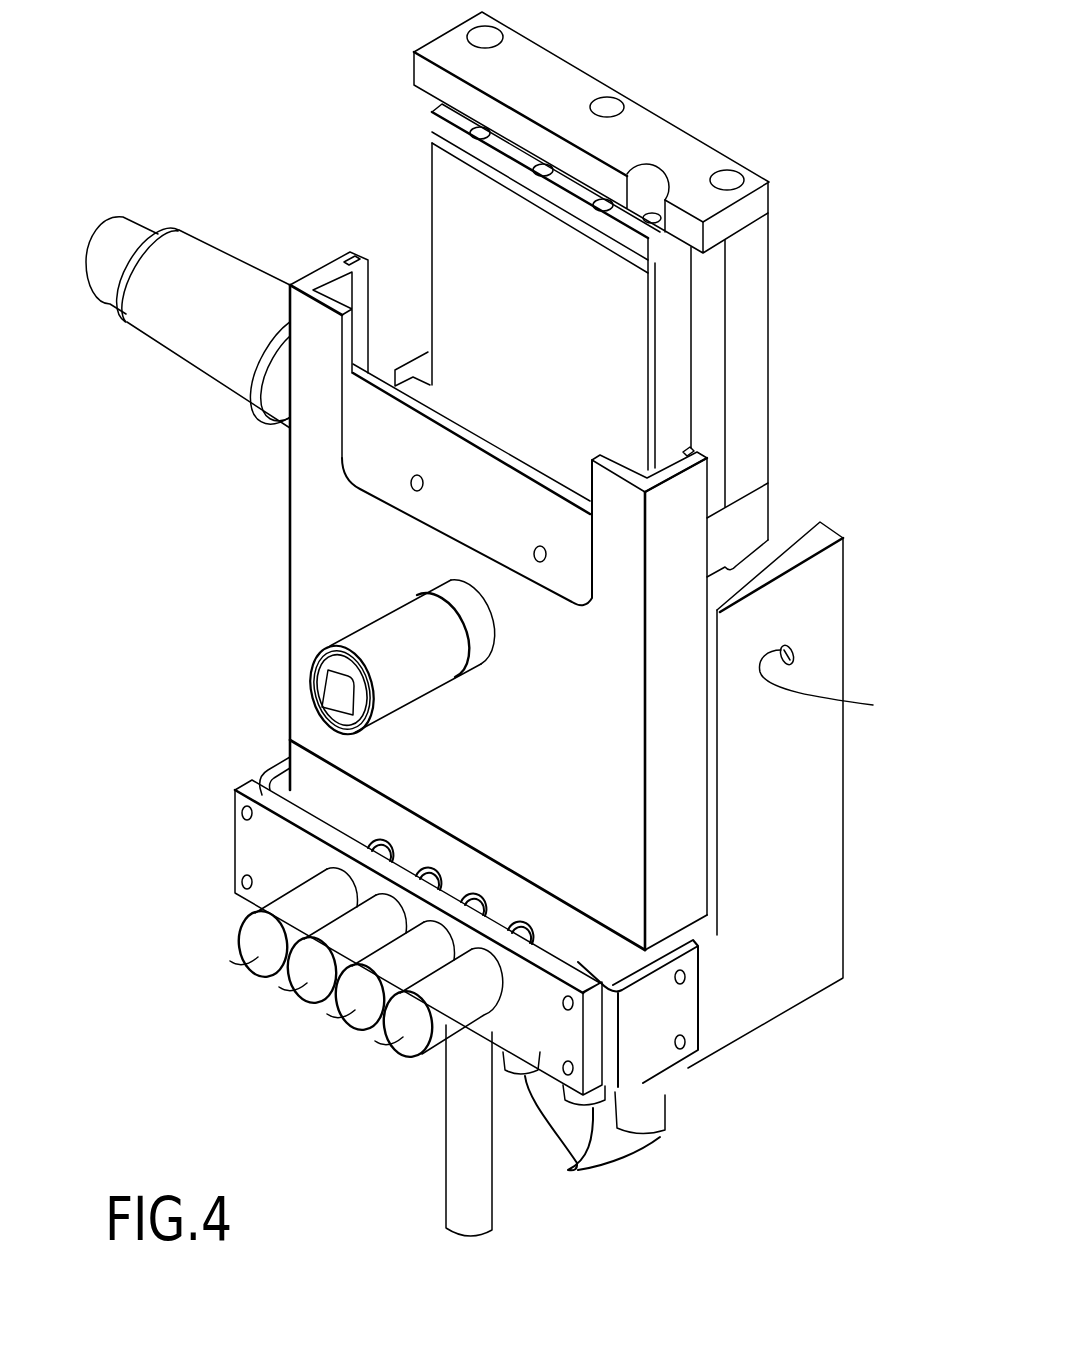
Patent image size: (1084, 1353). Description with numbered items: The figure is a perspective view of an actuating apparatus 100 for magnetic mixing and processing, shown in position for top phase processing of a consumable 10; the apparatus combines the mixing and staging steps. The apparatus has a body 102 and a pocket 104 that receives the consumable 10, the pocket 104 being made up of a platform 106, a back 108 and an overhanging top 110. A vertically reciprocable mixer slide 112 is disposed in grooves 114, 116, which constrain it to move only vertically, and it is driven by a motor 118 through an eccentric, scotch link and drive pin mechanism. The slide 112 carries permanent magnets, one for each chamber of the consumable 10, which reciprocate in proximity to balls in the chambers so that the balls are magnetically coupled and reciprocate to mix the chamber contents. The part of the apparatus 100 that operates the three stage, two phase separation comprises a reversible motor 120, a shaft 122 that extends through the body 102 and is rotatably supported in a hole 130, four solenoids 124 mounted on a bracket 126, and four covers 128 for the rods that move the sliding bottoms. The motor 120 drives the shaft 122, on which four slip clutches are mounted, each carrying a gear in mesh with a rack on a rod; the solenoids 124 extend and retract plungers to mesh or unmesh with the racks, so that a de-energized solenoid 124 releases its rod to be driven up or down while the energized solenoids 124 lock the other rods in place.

The actuating apparatus 100 is at (303, 81).
The consumable 10 is at (445, 170).
The body 102 is at (828, 577).
The pocket 104 is at (688, 302).
The platform 106 is at (753, 507).
The back 108 is at (758, 252).
The overhanging top 110 is at (758, 207).
The mixer slide 112 is at (312, 468).
The groove 114 is at (351, 248).
The groove 116 is at (690, 450).
The motor 118 is at (358, 647).
The motor 120 is at (240, 274).
The shaft 122 is at (791, 657).
The solenoids 124 is at (388, 1048).
The bracket 126 is at (250, 842).
The covers 128 is at (455, 1203).
The hole 130 is at (841, 686).